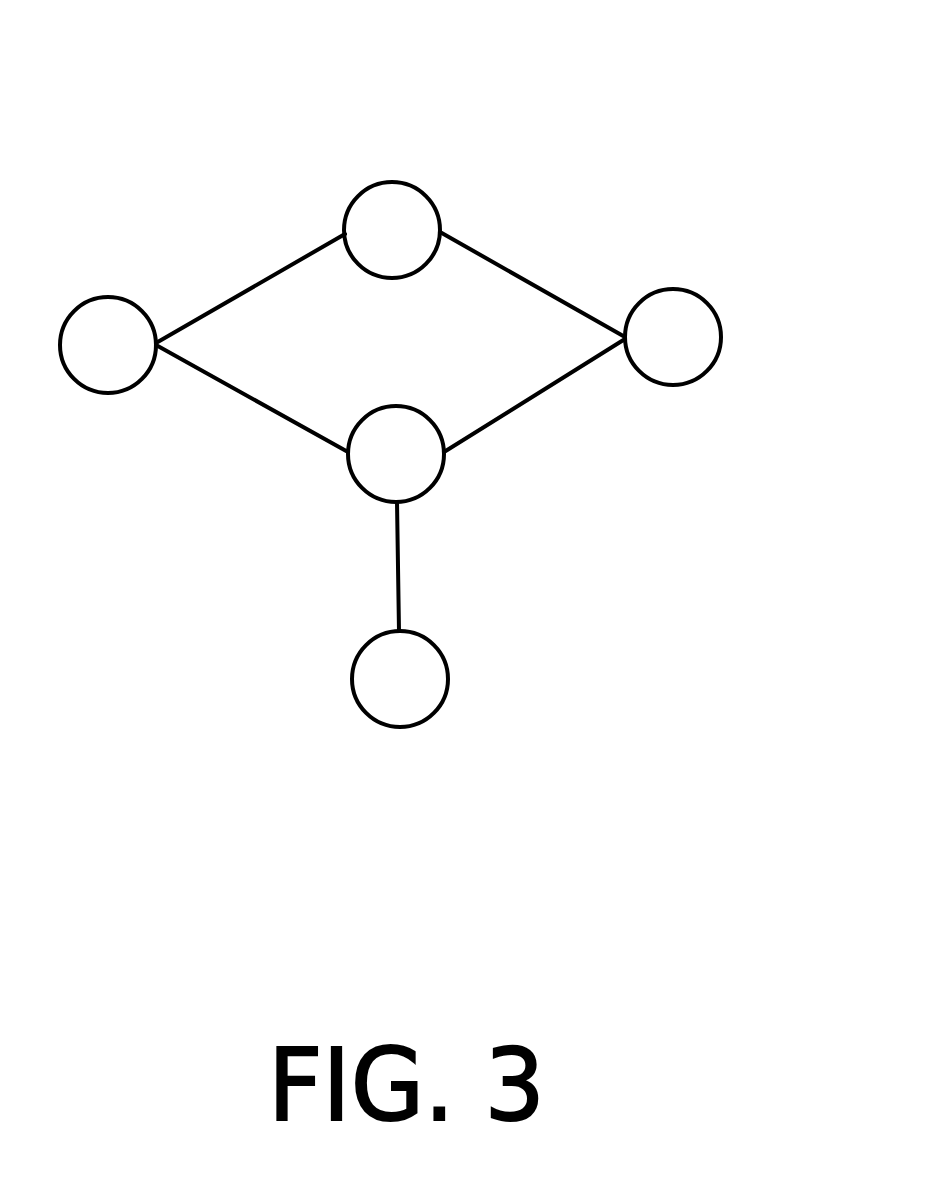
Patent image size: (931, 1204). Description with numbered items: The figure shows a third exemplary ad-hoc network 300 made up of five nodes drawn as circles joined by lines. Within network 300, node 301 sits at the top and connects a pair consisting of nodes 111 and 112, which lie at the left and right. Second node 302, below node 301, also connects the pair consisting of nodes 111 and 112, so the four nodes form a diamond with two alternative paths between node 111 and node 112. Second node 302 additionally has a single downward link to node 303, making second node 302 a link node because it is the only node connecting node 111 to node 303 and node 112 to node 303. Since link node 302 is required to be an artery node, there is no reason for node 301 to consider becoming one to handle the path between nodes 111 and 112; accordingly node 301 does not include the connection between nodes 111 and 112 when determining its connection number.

The third exemplary ad-hoc network 300 is at (683, 66).
The node 111 is at (123, 262).
The node 112 is at (688, 237).
The node 301 is at (411, 140).
The second node 302 is at (458, 514).
The node 303 is at (483, 724).